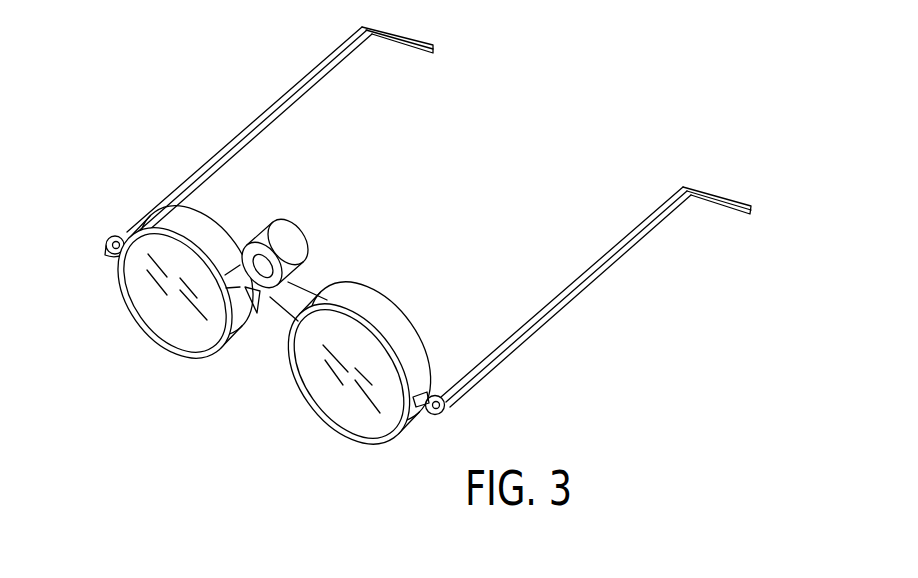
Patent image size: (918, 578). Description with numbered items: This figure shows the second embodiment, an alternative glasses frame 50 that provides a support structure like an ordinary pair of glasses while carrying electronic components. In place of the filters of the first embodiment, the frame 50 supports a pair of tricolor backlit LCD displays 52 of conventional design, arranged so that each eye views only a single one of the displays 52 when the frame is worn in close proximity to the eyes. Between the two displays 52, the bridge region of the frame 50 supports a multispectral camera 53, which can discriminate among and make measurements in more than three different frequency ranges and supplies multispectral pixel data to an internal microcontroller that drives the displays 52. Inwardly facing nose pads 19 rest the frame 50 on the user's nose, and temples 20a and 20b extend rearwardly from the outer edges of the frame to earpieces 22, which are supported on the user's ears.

The glasses frame 50 is at (178, 152).
The temple 20a is at (317, 63).
The temple 20b is at (568, 305).
The earpieces 22 is at (398, 33).
The tricolor backlit LCD displays 52 is at (178, 320).
The multispectral camera 53 is at (295, 237).
The nose pads 19 is at (272, 322).